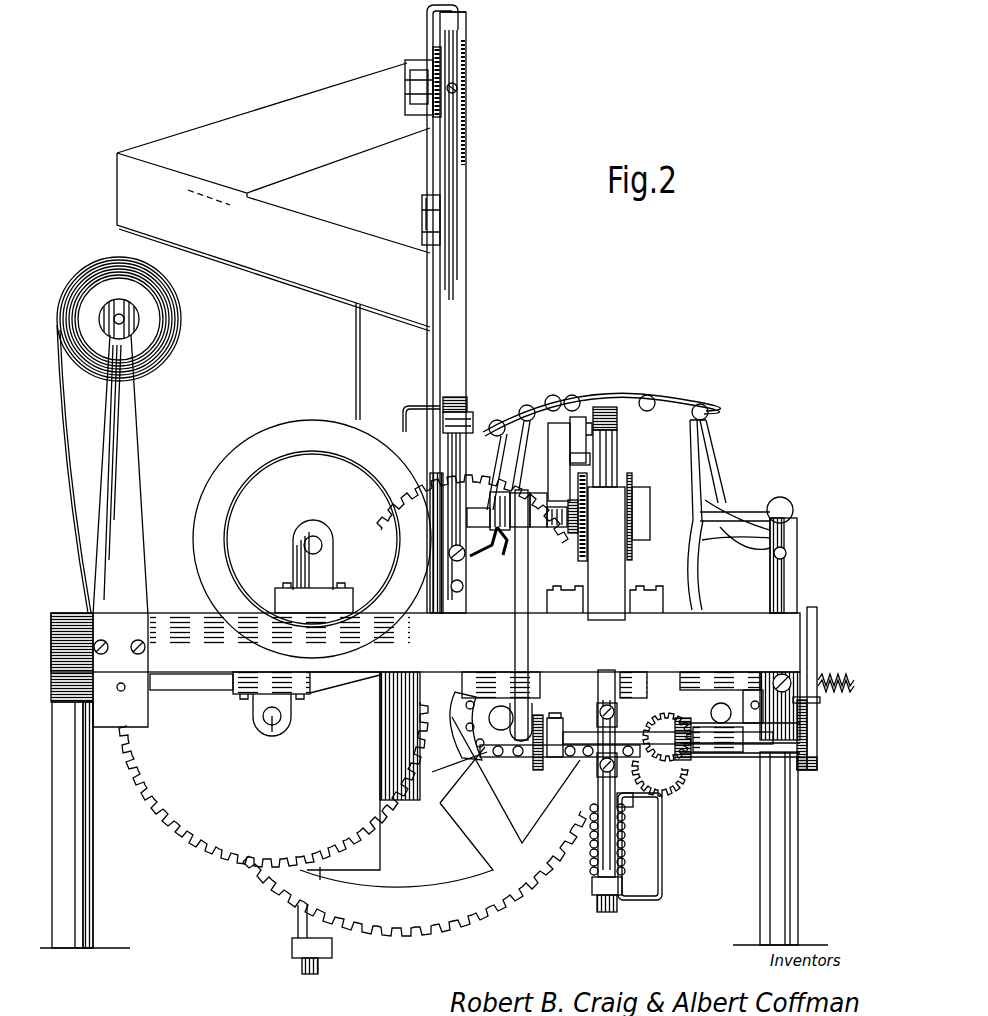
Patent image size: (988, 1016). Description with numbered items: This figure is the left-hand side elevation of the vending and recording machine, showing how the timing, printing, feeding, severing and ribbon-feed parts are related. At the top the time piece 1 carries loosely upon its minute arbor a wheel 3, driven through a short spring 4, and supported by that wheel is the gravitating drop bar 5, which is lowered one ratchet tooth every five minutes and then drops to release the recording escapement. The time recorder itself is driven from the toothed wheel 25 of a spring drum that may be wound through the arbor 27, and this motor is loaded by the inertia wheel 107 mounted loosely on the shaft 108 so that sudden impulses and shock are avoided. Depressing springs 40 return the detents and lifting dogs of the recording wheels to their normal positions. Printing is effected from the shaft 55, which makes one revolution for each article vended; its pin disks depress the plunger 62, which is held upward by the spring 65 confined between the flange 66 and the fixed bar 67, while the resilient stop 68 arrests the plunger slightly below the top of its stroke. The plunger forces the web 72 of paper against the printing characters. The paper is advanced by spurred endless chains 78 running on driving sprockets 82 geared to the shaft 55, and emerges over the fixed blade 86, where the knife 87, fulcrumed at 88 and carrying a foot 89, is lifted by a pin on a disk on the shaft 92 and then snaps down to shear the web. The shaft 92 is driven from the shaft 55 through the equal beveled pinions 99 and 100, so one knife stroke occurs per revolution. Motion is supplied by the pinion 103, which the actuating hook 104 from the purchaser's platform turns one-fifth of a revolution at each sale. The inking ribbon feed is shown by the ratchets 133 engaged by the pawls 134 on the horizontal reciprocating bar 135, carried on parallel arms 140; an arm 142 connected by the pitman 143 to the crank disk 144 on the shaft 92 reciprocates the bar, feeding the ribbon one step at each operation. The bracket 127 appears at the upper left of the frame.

The time piece 1 is at (455, 14).
The wheel 3 is at (424, 116).
The short spring 4 is at (408, 108).
The drop bar 5 is at (434, 298).
The toothed wheel 25 is at (163, 818).
The arbor 27 is at (272, 720).
The depressing springs 40 is at (690, 450).
The shaft 55 is at (665, 728).
The plunger 62 is at (596, 784).
The spring 65 is at (620, 856).
The flange 66 is at (628, 806).
The fixed bar 67 is at (592, 892).
The resilient stop 68 is at (662, 875).
The web 72 is at (60, 424).
The endless chains 78 is at (768, 710).
The driving sprockets 82 is at (698, 755).
The fixed blade 86 is at (806, 672).
The knife 87 is at (808, 712).
The fulcrum 88 is at (836, 691).
The foot 89 is at (812, 770).
The shaft 92 is at (578, 738).
The beveled pinion 99 is at (675, 780).
The beveled pinion 100 is at (692, 770).
The pinion 103 is at (472, 898).
The actuating hook 104 is at (300, 925).
The inertia wheel 107 is at (304, 428).
The shaft 108 is at (320, 544).
The bracket arm 127 is at (318, 104).
The ratchets 133 is at (590, 480).
The pawls 134 is at (598, 458).
The horizontal reciprocating bar 135 is at (583, 432).
The parallel arms 140 is at (556, 470).
The arm 142 is at (500, 545).
The pitman 143 is at (516, 592).
The crank disk 144 is at (524, 757).